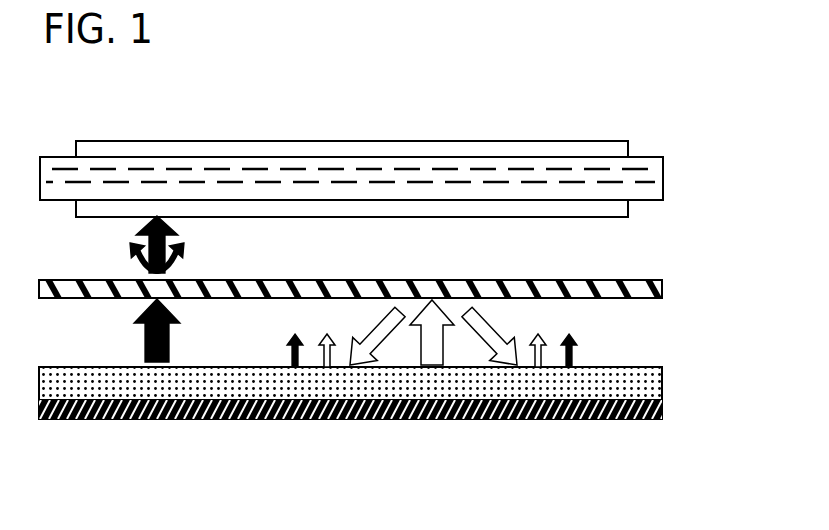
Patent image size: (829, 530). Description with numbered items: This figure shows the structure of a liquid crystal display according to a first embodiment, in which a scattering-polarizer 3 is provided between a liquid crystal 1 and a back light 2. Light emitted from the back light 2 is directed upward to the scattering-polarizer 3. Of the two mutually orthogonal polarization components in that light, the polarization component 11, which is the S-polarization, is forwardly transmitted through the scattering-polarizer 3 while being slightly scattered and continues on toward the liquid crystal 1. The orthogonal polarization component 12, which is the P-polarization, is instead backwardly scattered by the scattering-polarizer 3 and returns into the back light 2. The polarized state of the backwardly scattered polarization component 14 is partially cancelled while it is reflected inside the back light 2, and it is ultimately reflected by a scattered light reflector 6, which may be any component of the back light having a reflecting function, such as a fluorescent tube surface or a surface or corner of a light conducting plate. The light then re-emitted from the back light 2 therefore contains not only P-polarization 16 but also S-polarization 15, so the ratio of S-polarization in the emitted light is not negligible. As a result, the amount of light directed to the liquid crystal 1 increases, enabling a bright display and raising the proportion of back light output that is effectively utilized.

The liquid crystal 1 is at (655, 178).
The back light 2 is at (655, 383).
The scattering-polarizer 3 is at (664, 290).
The scattered light reflector 6 is at (662, 411).
The polarization component (S-polarization) 11 is at (156, 362).
The polarization component (P-polarization) 12 is at (433, 355).
The polarization component (backwardly scattered) 14 is at (358, 355).
The S-polarization 15 is at (293, 349).
The P-polarization 16 is at (323, 349).